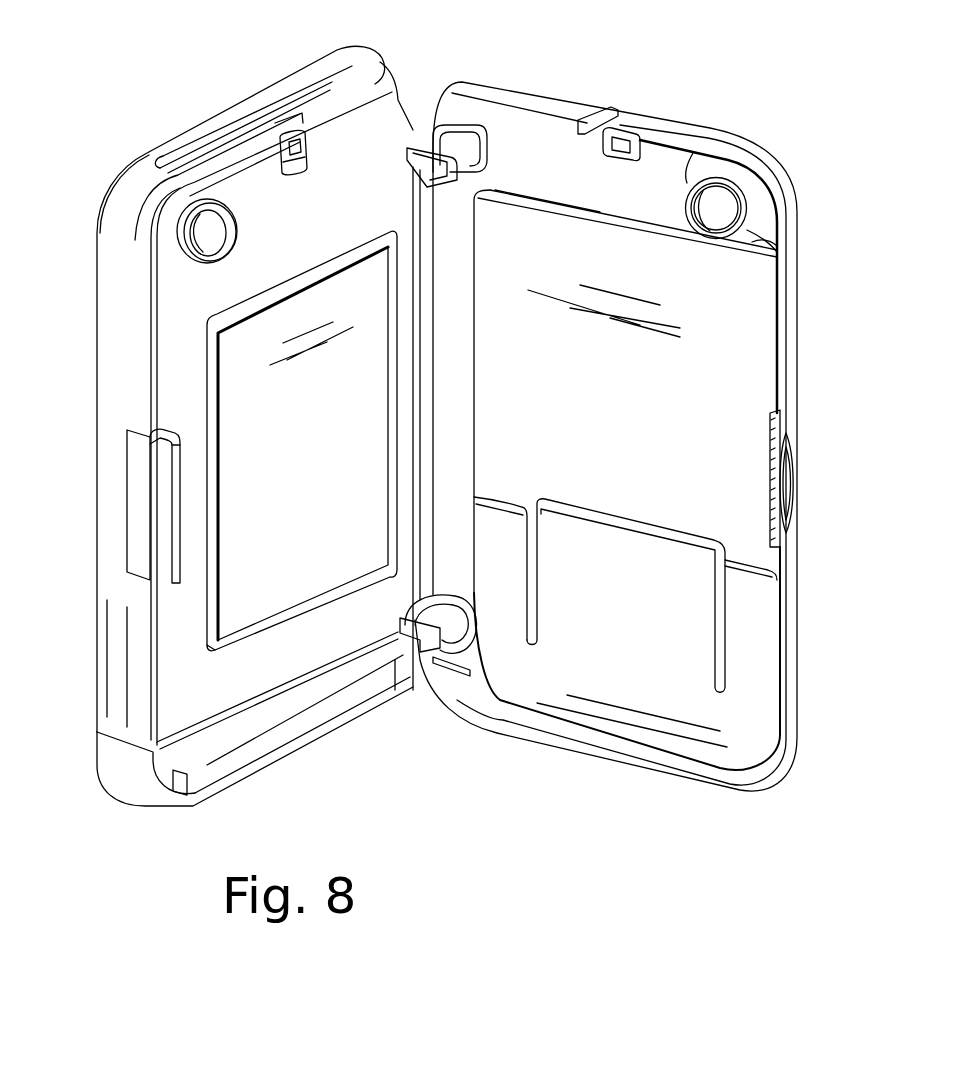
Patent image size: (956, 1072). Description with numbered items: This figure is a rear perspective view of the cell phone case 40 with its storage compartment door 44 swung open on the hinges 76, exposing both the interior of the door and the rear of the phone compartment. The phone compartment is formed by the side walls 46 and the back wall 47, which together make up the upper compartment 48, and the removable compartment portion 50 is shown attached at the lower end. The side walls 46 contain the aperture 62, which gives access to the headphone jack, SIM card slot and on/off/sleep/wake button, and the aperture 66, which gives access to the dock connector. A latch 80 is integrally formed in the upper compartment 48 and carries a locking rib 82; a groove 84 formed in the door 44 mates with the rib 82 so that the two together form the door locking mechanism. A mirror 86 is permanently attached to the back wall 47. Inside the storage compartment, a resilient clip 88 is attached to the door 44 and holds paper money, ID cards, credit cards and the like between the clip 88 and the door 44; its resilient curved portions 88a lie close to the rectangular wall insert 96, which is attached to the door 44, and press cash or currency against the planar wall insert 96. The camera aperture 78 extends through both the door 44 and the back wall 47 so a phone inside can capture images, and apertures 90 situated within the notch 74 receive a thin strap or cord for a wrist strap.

The cell phone case 40 is at (438, 455).
The storage compartment door 44 is at (606, 436).
The side walls 46 is at (229, 426).
The back wall 47 is at (345, 240).
The upper compartment 48 is at (96, 575).
The removable compartment portion 50 is at (103, 767).
The aperture 62 is at (135, 240).
The aperture 66 is at (335, 704).
The notch 74 is at (322, 88).
The hinges 76 is at (443, 178).
The camera aperture 78 is at (240, 233).
The latch 80 is at (177, 436).
The locking rib 82 is at (170, 510).
The groove 84 is at (771, 443).
The mirror 86 is at (277, 632).
The resilient clip 88 is at (638, 518).
The resilient curved portions 88a is at (495, 497).
The apertures 90 is at (308, 146).
The wall insert 96 is at (563, 195).